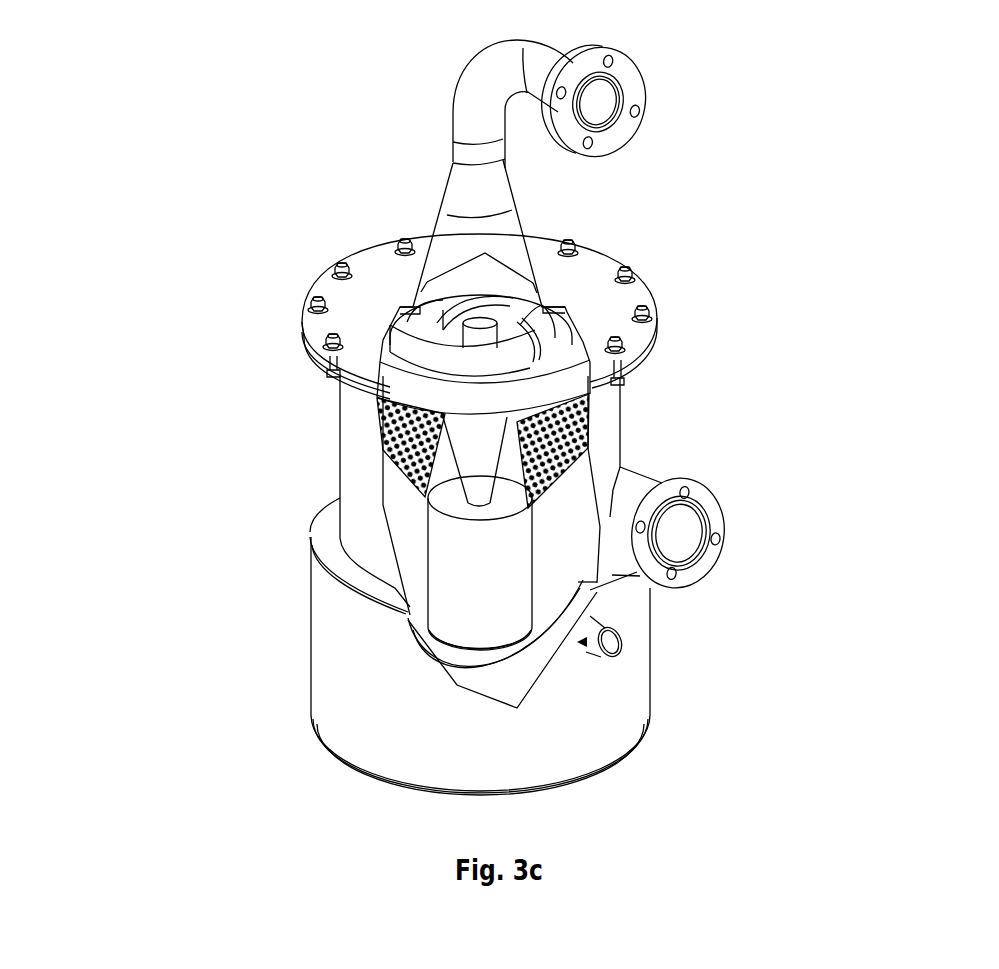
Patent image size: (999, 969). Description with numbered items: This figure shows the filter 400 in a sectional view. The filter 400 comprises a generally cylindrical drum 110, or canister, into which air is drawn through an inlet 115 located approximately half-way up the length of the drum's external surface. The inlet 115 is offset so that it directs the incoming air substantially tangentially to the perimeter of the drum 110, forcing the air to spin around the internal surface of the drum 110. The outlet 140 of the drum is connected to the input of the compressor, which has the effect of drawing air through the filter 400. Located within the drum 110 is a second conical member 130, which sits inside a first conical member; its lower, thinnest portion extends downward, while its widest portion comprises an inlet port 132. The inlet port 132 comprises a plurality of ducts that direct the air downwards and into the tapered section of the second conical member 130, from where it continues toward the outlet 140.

The filter 400 is at (297, 160).
The drum 110 is at (318, 458).
The inlet 115 is at (754, 531).
The second conical member 130 is at (488, 482).
The inlet port 132 is at (545, 372).
The outlet 140 is at (660, 137).